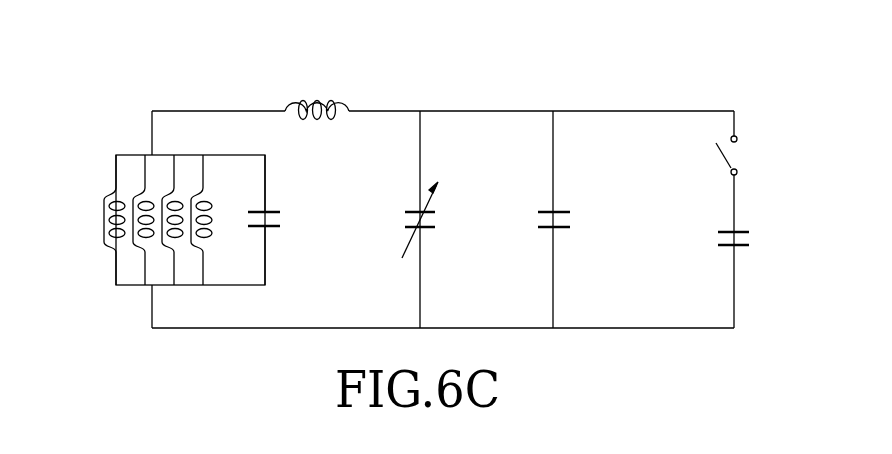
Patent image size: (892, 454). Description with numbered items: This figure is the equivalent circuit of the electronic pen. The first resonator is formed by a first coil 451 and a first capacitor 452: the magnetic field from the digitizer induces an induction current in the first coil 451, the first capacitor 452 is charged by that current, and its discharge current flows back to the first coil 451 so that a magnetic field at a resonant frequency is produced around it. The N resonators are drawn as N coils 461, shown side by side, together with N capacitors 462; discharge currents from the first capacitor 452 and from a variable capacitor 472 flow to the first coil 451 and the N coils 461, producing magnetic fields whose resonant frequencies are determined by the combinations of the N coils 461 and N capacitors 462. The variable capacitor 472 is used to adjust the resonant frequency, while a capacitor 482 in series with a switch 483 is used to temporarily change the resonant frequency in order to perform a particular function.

The N coils 461 is at (108, 204).
The first coil 451 is at (312, 97).
The N capacitors 462 is at (283, 219).
The variable capacitor 472 is at (440, 219).
The first capacitor 452 is at (572, 219).
The switch 483 is at (742, 155).
The capacitor 482 is at (752, 239).